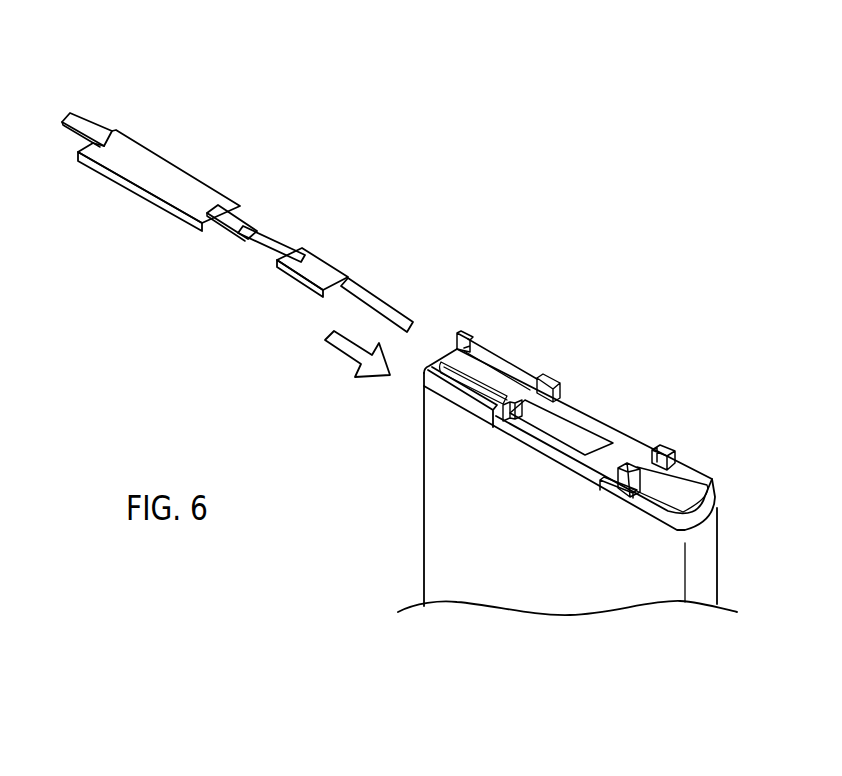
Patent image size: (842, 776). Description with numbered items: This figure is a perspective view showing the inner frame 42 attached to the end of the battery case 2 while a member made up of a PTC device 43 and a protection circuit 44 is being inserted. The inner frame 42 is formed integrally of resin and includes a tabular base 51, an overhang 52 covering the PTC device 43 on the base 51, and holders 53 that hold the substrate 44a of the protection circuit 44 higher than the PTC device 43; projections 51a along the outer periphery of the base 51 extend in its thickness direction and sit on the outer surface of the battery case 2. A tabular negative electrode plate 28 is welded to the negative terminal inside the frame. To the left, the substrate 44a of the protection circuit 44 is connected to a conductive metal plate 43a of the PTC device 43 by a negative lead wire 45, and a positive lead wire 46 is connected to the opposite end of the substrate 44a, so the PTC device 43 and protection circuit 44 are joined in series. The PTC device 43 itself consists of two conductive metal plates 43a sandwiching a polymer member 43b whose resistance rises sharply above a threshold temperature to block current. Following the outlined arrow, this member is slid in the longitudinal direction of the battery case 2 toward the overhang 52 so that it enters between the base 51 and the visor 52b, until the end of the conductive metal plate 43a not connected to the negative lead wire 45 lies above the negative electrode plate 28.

The battery case 2 is at (418, 487).
The negative electrode plate 28 is at (578, 440).
The inner frame 42 is at (623, 432).
The PTC device 43 is at (325, 247).
The conductive metal plate 43a is at (279, 243).
The polymer member 43b is at (317, 255).
The protection circuit 44 is at (159, 145).
The substrate 44a is at (203, 189).
The negative lead wire 45 is at (245, 215).
The positive lead wire 46 is at (88, 118).
The base 51 is at (503, 427).
The projections 51a is at (458, 406).
The overhang 52 is at (512, 329).
The visor 52b is at (487, 372).
The holders 53 is at (666, 445).